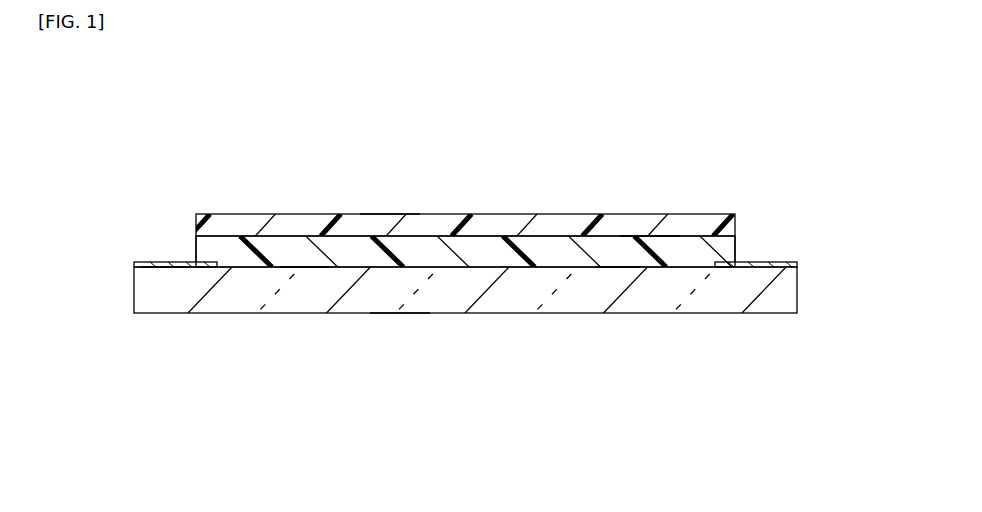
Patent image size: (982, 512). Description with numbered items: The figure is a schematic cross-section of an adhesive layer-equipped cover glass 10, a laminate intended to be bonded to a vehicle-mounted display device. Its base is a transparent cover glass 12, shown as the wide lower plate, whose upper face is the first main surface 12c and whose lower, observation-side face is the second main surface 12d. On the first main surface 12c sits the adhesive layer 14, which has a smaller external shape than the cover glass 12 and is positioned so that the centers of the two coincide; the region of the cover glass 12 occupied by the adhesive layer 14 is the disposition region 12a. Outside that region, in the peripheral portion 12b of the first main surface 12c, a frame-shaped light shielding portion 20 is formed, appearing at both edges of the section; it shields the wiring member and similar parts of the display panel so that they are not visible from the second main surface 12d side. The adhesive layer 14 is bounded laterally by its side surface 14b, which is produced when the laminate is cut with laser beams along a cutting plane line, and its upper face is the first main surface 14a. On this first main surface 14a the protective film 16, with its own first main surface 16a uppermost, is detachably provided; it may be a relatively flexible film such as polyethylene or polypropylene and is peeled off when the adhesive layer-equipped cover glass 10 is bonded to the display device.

The adhesive layer-equipped cover glass 10 is at (757, 158).
The cover glass 12 is at (776, 288).
The disposition region 12a is at (610, 267).
The peripheral portion 12b is at (165, 268).
The first main surface of cover glass 12c is at (305, 265).
The second main surface of cover glass 12d is at (397, 313).
The adhesive layer 14 is at (556, 255).
The first main surface of adhesive layer 14a is at (645, 236).
The side surface of adhesive layer 14b is at (196, 240).
The protective film 16 is at (447, 230).
The first main surface of protective film 16a is at (388, 214).
The light shielding portion 20 is at (153, 261).